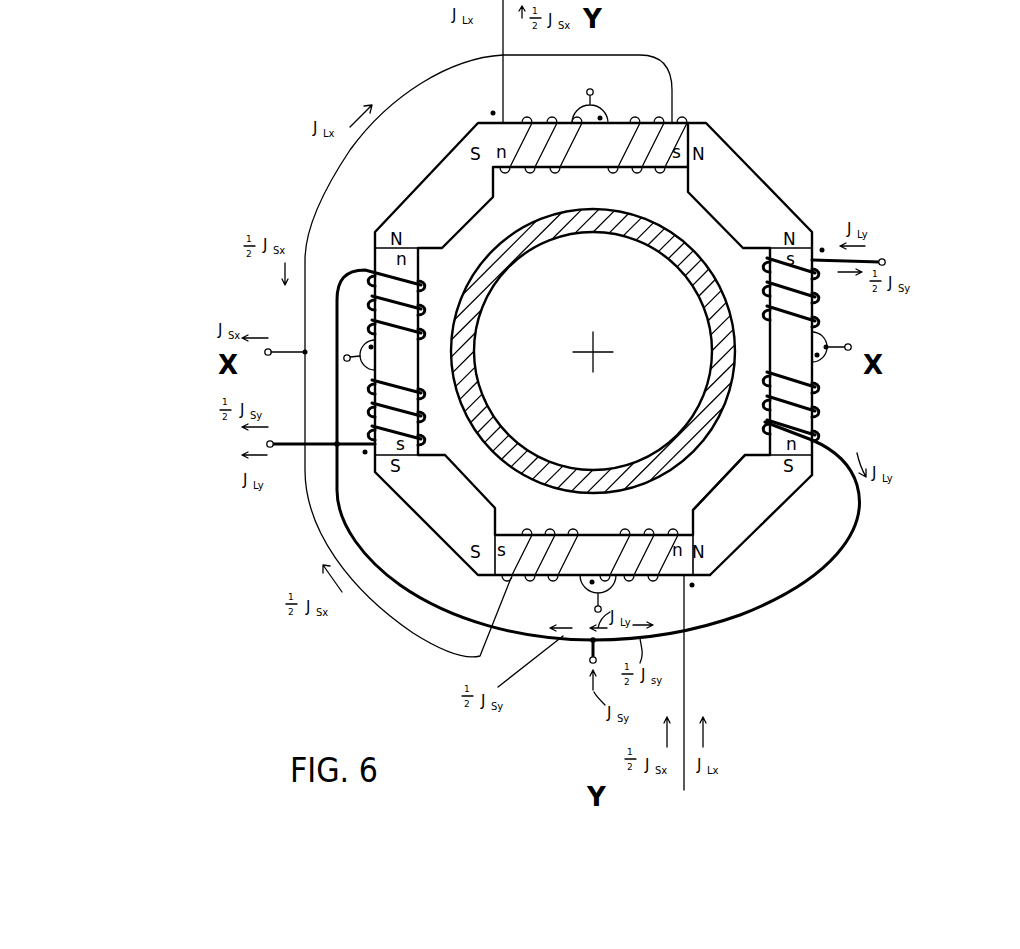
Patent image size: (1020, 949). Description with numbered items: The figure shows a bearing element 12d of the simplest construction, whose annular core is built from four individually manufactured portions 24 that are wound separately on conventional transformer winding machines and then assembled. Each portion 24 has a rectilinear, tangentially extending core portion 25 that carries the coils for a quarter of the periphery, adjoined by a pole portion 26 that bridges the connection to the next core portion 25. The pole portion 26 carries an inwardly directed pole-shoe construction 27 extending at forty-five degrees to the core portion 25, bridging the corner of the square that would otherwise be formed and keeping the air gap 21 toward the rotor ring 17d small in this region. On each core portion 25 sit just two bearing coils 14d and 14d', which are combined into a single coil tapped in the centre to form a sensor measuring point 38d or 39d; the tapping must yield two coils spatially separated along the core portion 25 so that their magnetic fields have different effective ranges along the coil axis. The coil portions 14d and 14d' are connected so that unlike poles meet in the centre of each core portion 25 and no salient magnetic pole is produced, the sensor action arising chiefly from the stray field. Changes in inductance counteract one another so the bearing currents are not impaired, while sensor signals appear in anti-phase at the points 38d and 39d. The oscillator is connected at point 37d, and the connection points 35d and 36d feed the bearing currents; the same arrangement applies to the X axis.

The bearing element 12d is at (420, 530).
The bearing coil 14d is at (399, 354).
The bearing coil 14d' is at (414, 401).
The rotor ring 17d is at (522, 455).
The air gap 21 is at (588, 195).
The portion of the annular core 24 is at (771, 530).
The core portion 25 is at (412, 428).
The pole portion 26 is at (763, 488).
The pole-shoe construction 27 is at (712, 492).
The connection point 35d is at (883, 258).
The connection point 36d is at (272, 447).
The connection point 37d is at (589, 661).
The sensor measuring point 38d is at (345, 355).
The sensor measuring point 39d is at (850, 346).